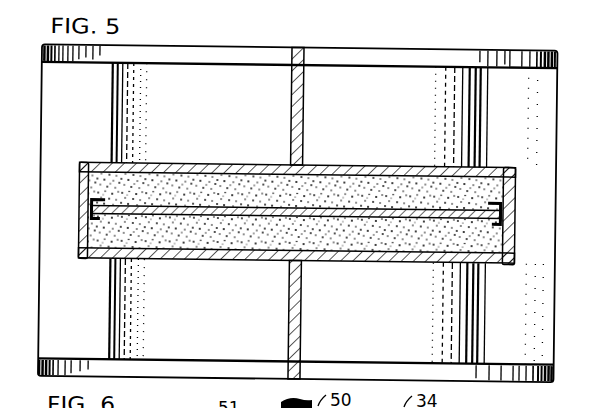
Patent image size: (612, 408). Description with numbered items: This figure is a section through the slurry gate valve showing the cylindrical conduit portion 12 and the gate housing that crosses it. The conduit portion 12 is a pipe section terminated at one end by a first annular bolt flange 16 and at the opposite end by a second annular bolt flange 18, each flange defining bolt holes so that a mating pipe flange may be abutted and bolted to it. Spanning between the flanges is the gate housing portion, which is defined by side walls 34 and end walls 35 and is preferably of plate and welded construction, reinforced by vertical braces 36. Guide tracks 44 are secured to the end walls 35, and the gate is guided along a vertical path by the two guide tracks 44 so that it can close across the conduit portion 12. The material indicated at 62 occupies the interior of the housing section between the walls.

The cylindrical conduit portion 12 is at (384, 80).
The first annular bolt flange 16 is at (528, 379).
The second annular bolt flange 18 is at (533, 48).
The side walls 34 is at (355, 260).
The end walls 35 is at (513, 237).
The vertical braces 36 is at (288, 70).
The guide tracks 44 is at (105, 165).
The filler material 62 is at (305, 199).